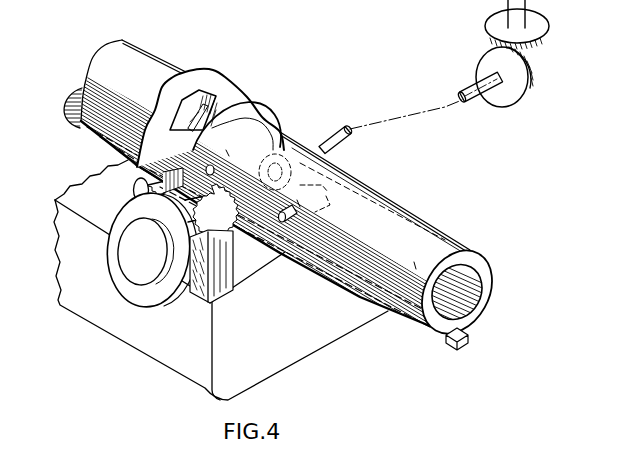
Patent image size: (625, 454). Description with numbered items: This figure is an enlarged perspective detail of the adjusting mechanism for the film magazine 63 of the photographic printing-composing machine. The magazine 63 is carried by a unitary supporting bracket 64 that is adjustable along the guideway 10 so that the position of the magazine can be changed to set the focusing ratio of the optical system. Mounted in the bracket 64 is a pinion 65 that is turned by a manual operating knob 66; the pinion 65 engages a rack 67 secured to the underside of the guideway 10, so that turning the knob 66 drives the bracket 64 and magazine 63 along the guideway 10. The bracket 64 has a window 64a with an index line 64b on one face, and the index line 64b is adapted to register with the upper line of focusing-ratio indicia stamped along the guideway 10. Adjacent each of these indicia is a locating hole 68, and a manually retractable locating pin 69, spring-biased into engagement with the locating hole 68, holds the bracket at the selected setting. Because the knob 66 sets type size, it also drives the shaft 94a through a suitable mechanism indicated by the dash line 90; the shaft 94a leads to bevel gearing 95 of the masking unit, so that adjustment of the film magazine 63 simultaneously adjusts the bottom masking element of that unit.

The guideway 10 is at (387, 212).
The film magazine 63 is at (327, 335).
The supporting bracket 64 is at (238, 102).
The window 64a is at (208, 100).
The index line 64b is at (172, 120).
The pinion 65 is at (229, 280).
The knob 66 is at (166, 294).
The rack 67 is at (464, 342).
The locating hole 68 is at (214, 168).
The locating pin 69 is at (137, 192).
The dash line 90 is at (343, 142).
The shaft 94a is at (477, 102).
The bevel gearing 95 is at (528, 50).